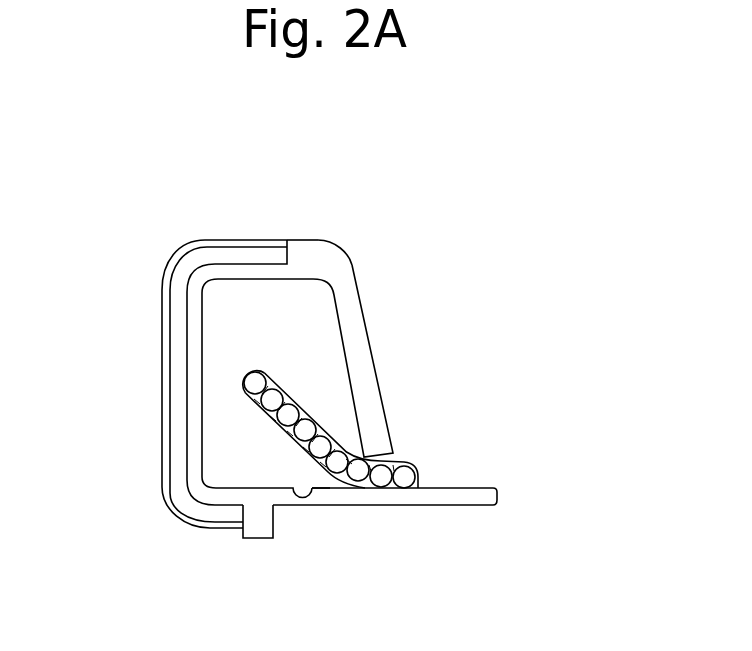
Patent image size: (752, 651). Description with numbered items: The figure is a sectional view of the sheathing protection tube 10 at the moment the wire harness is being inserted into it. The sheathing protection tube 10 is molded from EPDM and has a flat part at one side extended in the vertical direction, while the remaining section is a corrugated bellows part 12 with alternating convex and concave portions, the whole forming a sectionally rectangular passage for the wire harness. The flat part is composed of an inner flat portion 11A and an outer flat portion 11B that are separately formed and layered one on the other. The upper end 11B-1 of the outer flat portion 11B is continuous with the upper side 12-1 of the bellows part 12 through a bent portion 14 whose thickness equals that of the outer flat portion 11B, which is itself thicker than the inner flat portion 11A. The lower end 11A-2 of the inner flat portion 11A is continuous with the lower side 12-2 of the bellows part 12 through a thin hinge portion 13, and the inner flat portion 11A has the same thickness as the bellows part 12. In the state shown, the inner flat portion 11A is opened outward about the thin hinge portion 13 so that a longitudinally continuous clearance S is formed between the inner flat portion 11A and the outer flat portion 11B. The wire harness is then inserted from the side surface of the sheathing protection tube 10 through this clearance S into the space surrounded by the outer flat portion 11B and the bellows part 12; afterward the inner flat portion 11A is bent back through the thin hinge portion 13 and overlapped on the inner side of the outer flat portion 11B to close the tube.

The sheathing protection tube 10 is at (182, 230).
The bellows part 12 is at (163, 342).
The upper side of the bellows part 12-1 is at (285, 241).
The lower side of the bellows part 12-2 is at (275, 512).
The outer flat portion 11B is at (355, 320).
The upper end of the outer flat portion 11B-1 is at (340, 267).
The bent portion 14 is at (322, 252).
The inner flat portion 11A is at (457, 496).
The lower end of the inner flat portion 11A-2 is at (315, 494).
The thin hinge portion 13 is at (302, 497).
The electric wires W is at (322, 447).
The clearance S is at (390, 462).